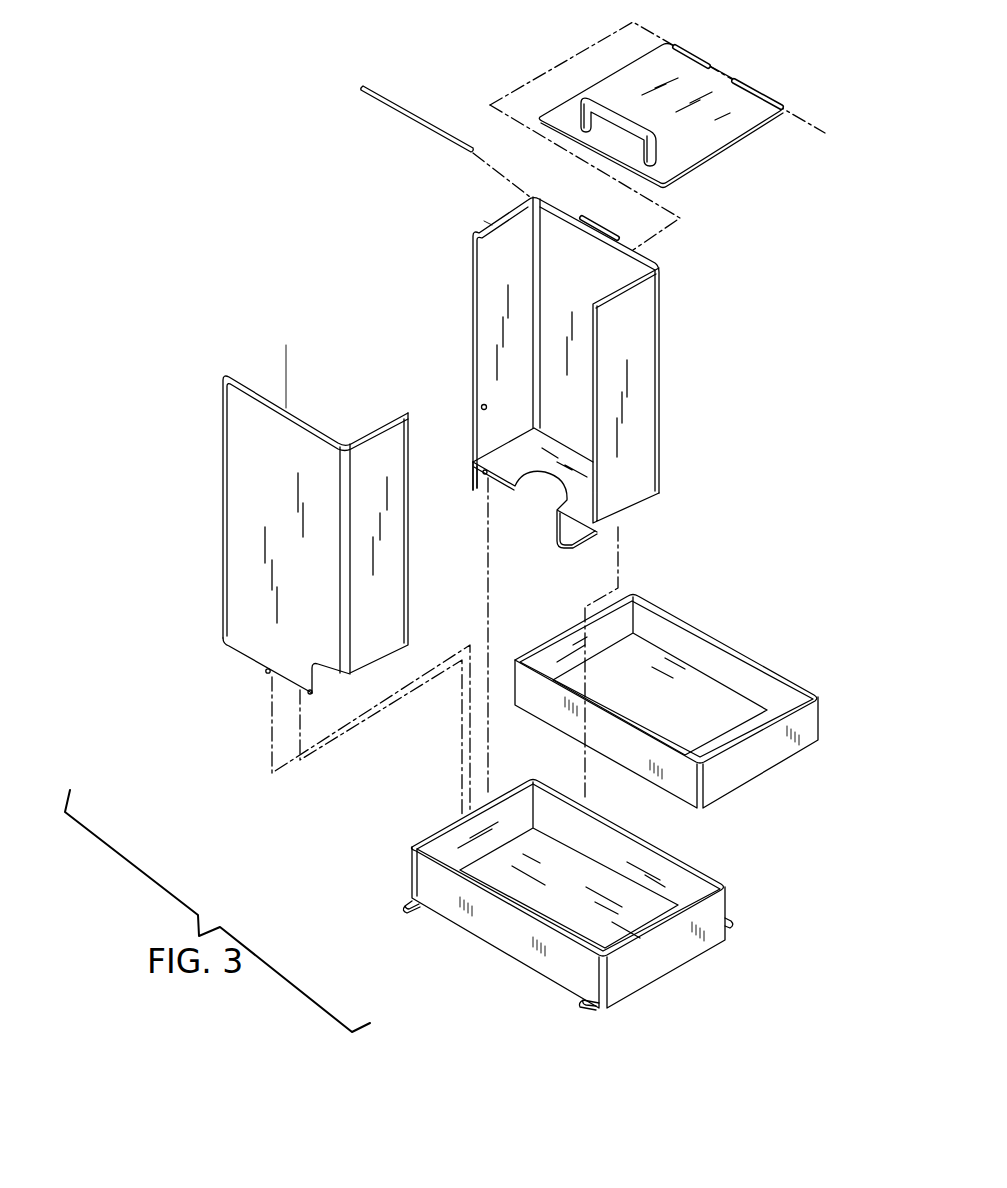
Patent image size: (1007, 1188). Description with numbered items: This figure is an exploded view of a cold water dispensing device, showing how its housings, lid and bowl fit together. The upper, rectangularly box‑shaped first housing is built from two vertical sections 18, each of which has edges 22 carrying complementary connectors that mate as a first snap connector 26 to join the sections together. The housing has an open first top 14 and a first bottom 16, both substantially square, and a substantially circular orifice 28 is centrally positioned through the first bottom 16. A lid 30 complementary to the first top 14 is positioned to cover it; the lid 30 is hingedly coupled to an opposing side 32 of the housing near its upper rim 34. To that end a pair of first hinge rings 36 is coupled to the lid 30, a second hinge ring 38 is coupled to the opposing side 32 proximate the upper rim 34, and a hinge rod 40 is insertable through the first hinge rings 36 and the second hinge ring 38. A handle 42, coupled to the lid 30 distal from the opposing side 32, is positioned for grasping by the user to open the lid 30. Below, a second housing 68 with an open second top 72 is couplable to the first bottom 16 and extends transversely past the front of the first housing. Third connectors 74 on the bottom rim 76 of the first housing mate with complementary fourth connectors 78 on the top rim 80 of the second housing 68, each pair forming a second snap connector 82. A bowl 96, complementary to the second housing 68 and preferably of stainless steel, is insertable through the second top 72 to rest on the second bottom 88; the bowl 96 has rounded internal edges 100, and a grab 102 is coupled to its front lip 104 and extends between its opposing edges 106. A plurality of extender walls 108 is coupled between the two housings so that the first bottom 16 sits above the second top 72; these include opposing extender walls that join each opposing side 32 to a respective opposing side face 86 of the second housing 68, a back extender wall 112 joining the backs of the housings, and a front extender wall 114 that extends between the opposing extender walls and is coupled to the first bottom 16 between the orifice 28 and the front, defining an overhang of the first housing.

The first top 14 is at (300, 388).
The first bottom 16 is at (505, 455).
The vertical section 18 is at (263, 350).
The edge 22 is at (466, 339).
The first snap connector 26 is at (465, 239).
The orifice 28 is at (531, 489).
The lid 30 is at (732, 148).
The opposing side 32 is at (265, 533).
The upper rim 34 is at (362, 428).
The first hinge ring 36 is at (707, 53).
The second hinge ring 38 is at (606, 222).
The hinge rod 40 is at (428, 136).
The handle 42 is at (612, 107).
The second housing 68 is at (702, 877).
The second top 72 is at (573, 902).
The third connector 74 is at (263, 674).
The bottom rim 76 is at (235, 656).
The fourth connector 78 is at (491, 798).
The top rim 80 is at (460, 819).
The second snap connector 82 is at (465, 811).
The opposing side face 86 is at (493, 929).
The second bottom 88 is at (647, 910).
The bowl 96 is at (715, 642).
The internal edges 100 is at (664, 659).
The grab 102 is at (796, 705).
The front lip 104 is at (759, 742).
The opposing edges 106 is at (776, 686).
The extender walls 108 is at (306, 683).
The back extender wall 112 is at (477, 485).
The front extender wall 114 is at (568, 528).